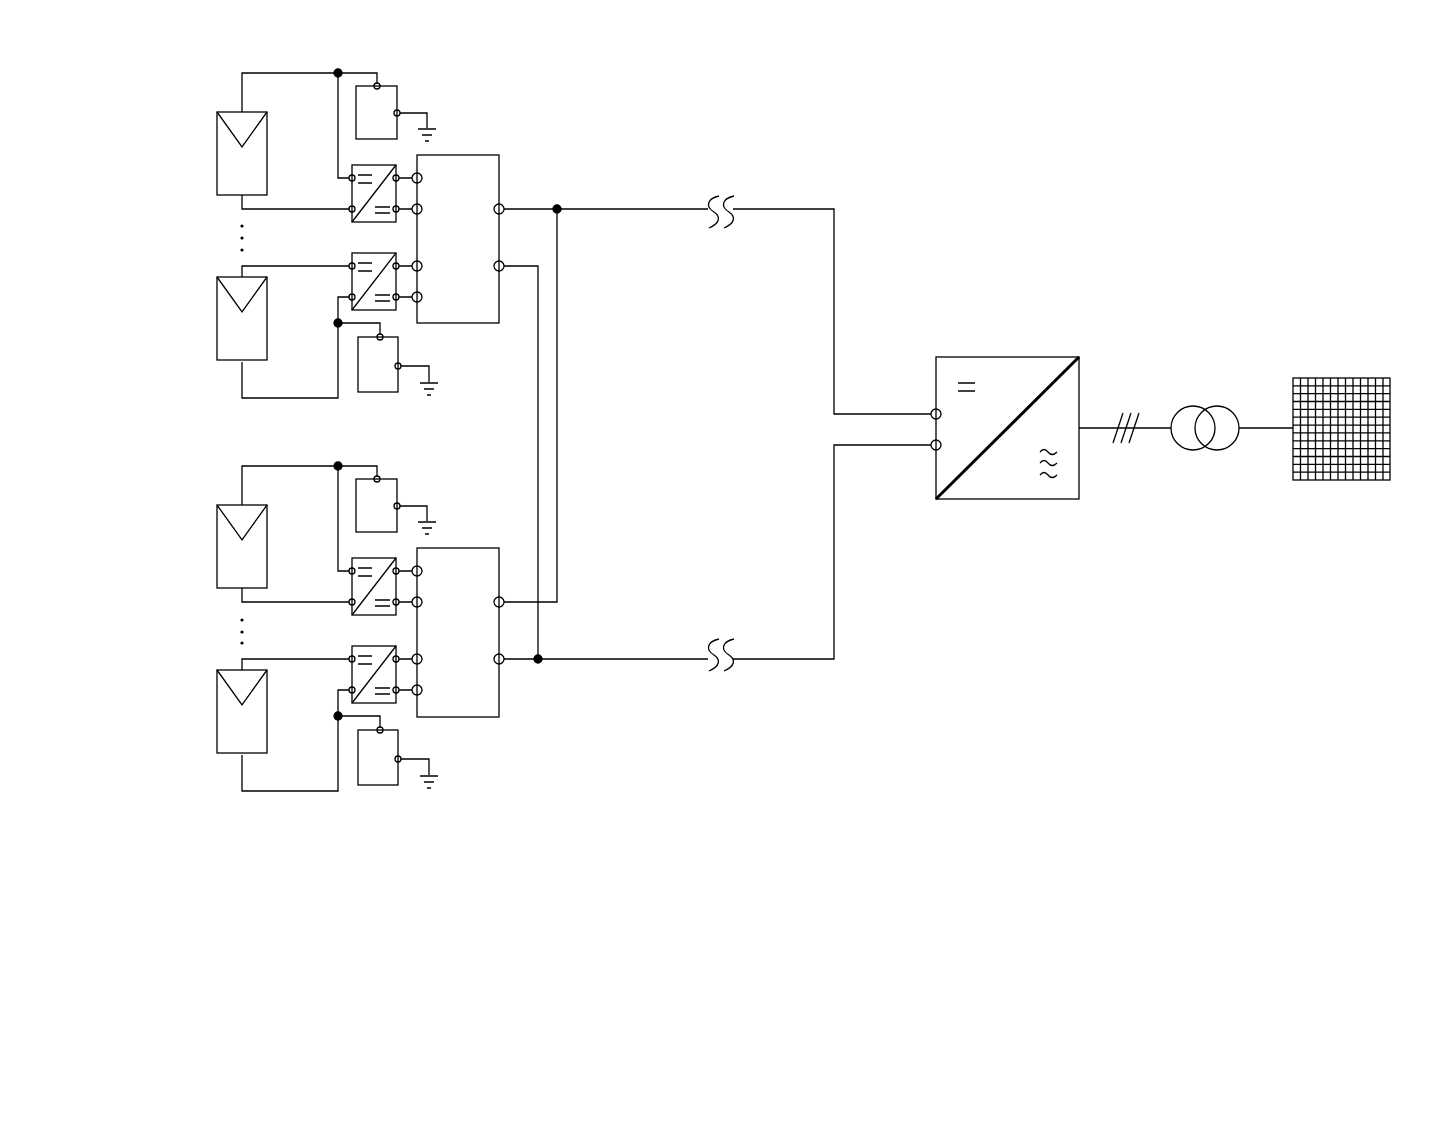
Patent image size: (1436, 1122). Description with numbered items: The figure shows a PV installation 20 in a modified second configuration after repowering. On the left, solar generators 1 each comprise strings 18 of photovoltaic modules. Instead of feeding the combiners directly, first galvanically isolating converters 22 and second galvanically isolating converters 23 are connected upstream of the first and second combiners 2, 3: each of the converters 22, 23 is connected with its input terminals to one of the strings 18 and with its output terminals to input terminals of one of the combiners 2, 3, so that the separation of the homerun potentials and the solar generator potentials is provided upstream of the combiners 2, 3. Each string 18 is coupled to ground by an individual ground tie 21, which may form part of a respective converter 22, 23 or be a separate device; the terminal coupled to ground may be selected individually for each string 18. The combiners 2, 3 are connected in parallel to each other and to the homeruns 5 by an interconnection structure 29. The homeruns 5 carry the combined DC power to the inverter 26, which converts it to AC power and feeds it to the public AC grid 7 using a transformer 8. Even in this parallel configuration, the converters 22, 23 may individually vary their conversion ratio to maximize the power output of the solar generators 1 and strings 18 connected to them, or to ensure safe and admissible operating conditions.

The solar generator 1 is at (163, 180).
The first combiner 2 is at (475, 155).
The second combiner 3 is at (453, 548).
The homerun 5 is at (798, 209).
The AC grid 7 is at (1350, 378).
The transformer 8 is at (1213, 405).
The string 18 is at (217, 120).
The PV installation 20 is at (951, 630).
The ground tie 21 is at (398, 102).
The first galvanically isolating converter 22 is at (352, 282).
The second galvanically isolating converter 23 is at (355, 675).
The inverter 26 is at (1052, 357).
The interconnection structure 29 is at (557, 437).